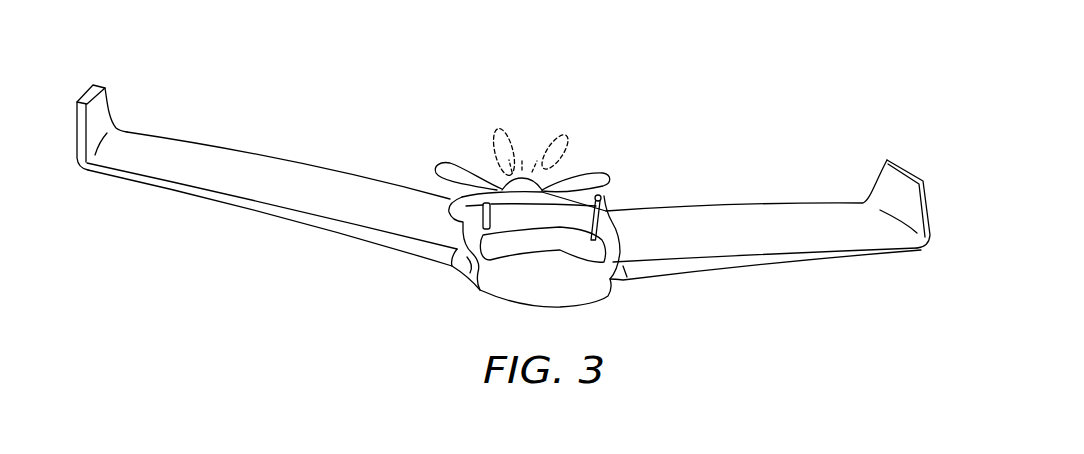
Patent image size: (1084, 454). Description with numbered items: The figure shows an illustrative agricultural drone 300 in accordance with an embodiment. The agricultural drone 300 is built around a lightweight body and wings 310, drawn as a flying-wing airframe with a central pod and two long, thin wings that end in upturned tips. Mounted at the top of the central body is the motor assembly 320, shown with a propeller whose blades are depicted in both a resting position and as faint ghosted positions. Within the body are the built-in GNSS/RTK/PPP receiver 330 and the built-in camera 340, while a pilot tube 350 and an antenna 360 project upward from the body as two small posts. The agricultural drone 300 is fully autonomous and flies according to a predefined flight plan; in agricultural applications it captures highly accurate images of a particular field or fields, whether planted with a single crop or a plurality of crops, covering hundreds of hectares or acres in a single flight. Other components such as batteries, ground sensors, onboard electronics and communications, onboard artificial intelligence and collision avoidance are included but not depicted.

The agricultural drone 300 is at (379, 93).
The lightweight body and wings 310 is at (790, 223).
The motor assembly 320 is at (472, 164).
The built-in GNSS/RTK/PPP receiver 330 is at (563, 246).
The built-in camera 340 is at (541, 190).
The pilot tube 350 is at (483, 221).
The antenna 360 is at (543, 192).